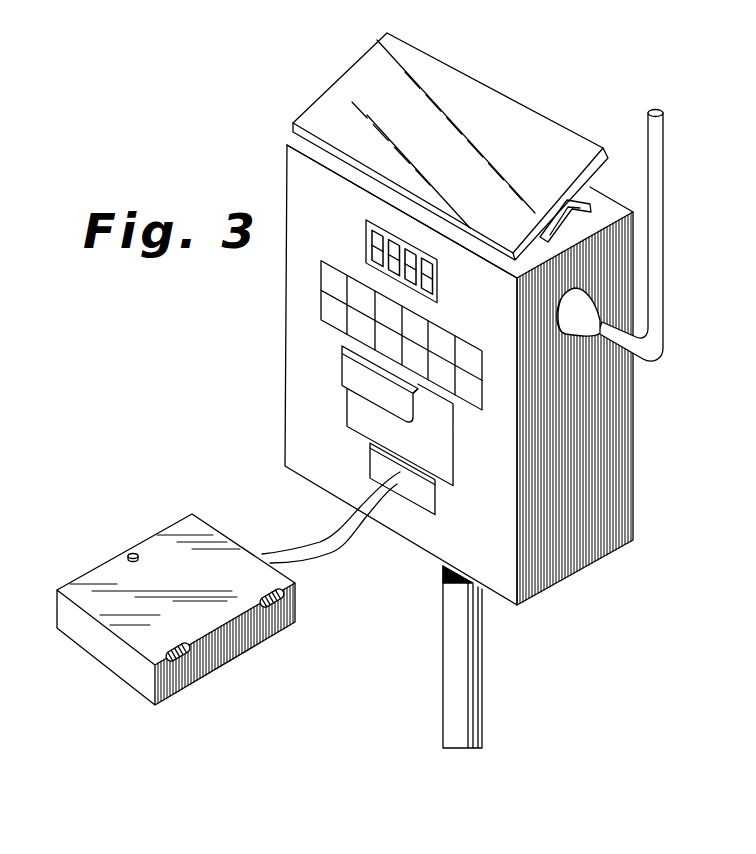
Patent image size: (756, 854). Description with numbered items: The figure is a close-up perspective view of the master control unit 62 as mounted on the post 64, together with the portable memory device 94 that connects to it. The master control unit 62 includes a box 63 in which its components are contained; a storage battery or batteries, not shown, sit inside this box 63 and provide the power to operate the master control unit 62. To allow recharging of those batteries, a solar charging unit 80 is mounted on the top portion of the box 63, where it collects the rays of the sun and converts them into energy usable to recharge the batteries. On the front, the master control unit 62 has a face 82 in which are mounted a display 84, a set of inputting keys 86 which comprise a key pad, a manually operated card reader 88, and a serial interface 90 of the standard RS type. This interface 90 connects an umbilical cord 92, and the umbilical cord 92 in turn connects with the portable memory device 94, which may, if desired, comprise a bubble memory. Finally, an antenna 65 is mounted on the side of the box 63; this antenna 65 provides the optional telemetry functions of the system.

The master control unit 62 is at (435, 396).
The box 63 is at (607, 442).
The post 64 is at (473, 673).
The antenna 65 is at (660, 200).
The solar charging unit 80 is at (474, 108).
The face 82 is at (327, 396).
The display 84 is at (370, 242).
The inputting keys 86 is at (333, 308).
The manually operated card reader 88 is at (380, 422).
The RS-232 interface 90 is at (423, 497).
The umbilical cord 92 is at (318, 555).
The portable memory device 94 is at (133, 667).